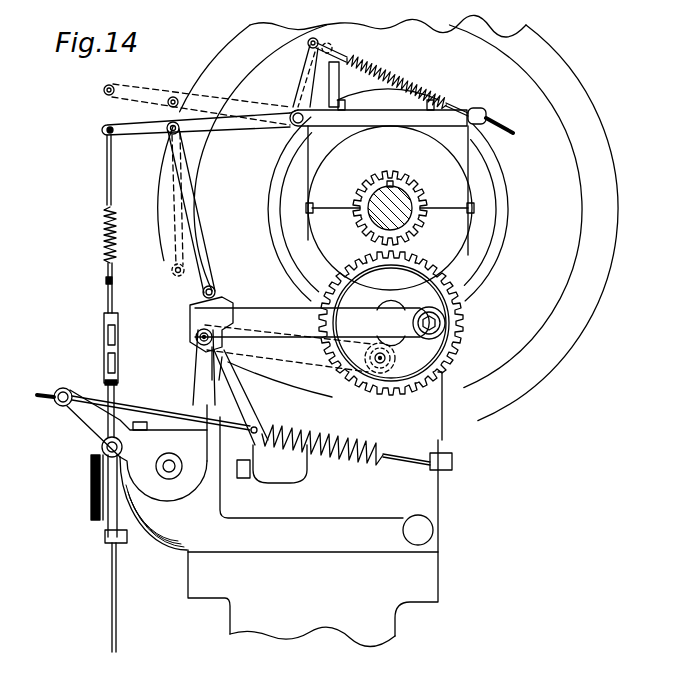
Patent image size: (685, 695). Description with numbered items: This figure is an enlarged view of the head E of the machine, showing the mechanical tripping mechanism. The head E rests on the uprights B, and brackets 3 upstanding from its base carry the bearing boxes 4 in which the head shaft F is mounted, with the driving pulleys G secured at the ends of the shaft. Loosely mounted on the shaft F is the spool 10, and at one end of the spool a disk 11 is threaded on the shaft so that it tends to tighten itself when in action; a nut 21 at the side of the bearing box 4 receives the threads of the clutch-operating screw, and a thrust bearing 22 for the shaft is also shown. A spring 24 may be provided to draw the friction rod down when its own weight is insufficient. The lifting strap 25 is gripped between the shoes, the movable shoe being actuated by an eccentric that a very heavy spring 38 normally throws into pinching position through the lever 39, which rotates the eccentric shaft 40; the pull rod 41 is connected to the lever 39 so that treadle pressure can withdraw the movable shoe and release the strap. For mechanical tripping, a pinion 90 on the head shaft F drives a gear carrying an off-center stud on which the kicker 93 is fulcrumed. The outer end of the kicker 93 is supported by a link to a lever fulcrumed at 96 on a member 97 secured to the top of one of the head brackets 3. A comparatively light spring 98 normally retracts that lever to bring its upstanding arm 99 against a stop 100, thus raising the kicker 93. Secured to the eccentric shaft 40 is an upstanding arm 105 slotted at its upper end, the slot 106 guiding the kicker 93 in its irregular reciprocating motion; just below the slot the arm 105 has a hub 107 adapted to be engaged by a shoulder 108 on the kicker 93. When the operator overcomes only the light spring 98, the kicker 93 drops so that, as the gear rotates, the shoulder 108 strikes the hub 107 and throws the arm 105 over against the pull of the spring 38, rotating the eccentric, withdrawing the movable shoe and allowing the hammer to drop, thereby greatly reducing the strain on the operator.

The driving pulley G is at (602, 242).
The upright B is at (387, 623).
The head E is at (433, 527).
The head shaft F is at (410, 190).
The bracket 3 is at (455, 418).
The bearing box 4 is at (468, 190).
The spool 10 is at (508, 192).
The disk 11 is at (495, 243).
The nut 21 is at (423, 262).
The thrust bearing 22 is at (455, 348).
The spring 24 is at (190, 203).
The strap 25 is at (247, 125).
The spring 38 is at (348, 458).
The lever 39 is at (95, 422).
The eccentric shaft 40 is at (177, 477).
The pull rod 41 is at (117, 582).
The pinion 90 is at (418, 186).
The kicker 93 is at (353, 318).
The fulcrum 96 is at (278, 137).
The member 97 is at (327, 138).
The spring 98 is at (385, 77).
The upstanding arm 99 is at (302, 75).
The stop 100 is at (333, 75).
The upstanding arm 105 is at (187, 370).
The slot 106 is at (237, 308).
The hub 107 is at (195, 337).
The shoulder 108 is at (214, 350).